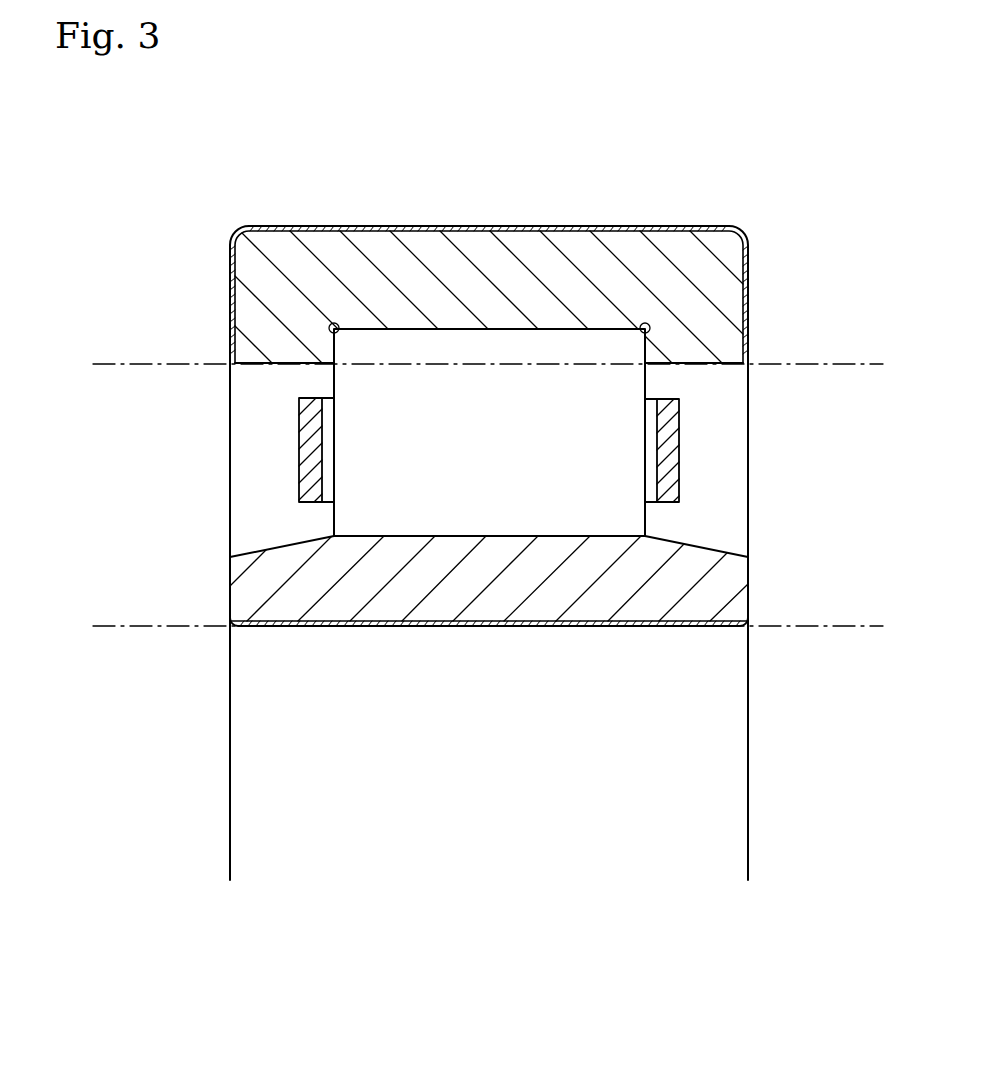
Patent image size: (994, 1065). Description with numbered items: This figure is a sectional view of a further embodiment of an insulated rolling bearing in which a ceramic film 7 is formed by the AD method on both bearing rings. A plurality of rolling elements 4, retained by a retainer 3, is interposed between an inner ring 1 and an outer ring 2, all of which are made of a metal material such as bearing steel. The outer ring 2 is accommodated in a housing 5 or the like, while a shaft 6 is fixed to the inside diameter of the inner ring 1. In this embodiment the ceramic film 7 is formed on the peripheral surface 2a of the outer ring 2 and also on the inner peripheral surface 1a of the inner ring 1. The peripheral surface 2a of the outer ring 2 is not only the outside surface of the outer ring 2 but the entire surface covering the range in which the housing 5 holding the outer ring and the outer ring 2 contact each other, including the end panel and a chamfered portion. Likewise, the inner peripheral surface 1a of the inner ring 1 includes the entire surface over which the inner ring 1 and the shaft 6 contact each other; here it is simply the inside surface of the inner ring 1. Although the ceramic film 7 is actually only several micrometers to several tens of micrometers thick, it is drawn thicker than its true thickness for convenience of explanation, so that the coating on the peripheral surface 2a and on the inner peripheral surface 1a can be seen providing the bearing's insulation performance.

The inner ring 1 is at (710, 583).
The inner peripheral surface 1a is at (592, 620).
The outer ring 2 is at (710, 317).
The peripheral surface 2a is at (235, 310).
The retainer 3 is at (663, 472).
The rolling elements 4 is at (617, 390).
The housing 5 is at (103, 366).
The shaft 6 is at (194, 625).
The ceramic film 7 is at (667, 227).